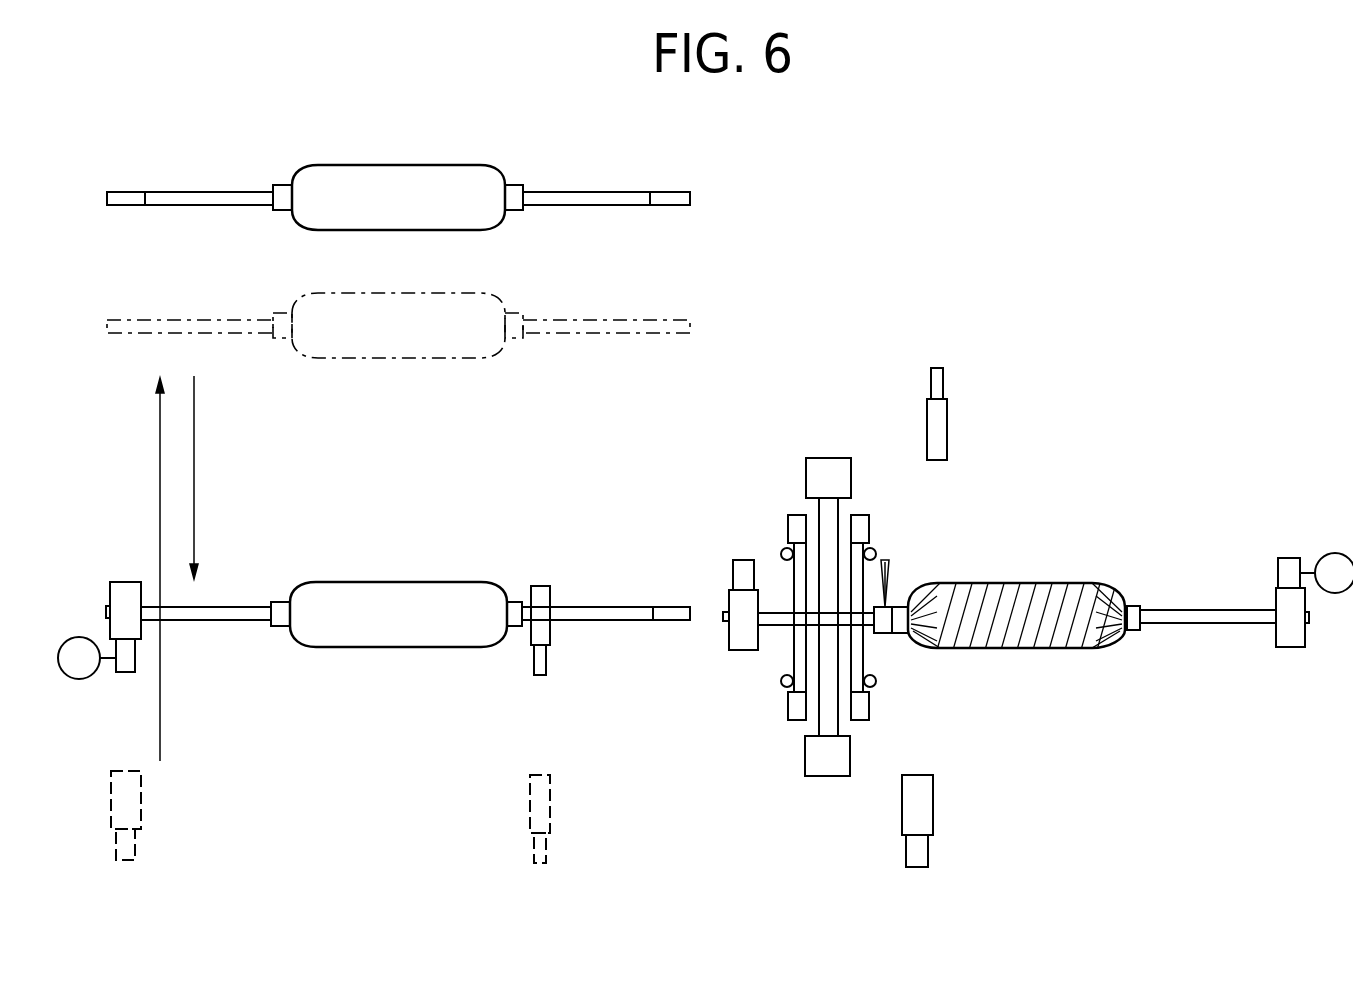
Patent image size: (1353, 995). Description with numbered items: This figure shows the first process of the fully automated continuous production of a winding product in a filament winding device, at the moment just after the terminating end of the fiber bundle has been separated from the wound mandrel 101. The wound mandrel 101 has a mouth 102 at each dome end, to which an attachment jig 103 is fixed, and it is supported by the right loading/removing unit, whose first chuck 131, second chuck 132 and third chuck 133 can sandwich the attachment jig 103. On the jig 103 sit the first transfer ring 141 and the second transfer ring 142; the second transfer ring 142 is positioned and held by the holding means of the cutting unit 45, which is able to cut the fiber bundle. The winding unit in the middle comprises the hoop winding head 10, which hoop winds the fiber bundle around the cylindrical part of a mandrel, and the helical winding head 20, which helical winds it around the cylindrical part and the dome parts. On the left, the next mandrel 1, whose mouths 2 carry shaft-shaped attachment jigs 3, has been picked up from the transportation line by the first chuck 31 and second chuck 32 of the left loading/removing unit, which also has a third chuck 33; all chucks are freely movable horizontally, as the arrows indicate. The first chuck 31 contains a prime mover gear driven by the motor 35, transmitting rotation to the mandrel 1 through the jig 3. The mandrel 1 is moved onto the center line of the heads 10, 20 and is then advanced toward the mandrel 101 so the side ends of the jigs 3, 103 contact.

The mandrel 1 is at (375, 232).
The mouth 2 is at (285, 213).
The attachment jig 3 is at (202, 207).
The hoop winding head 10 is at (795, 720).
The helical winding head 20 is at (827, 777).
The first chuck 31 is at (127, 582).
The second chuck 32 is at (539, 585).
The third chuck 33 is at (933, 803).
The motor 35 is at (69, 679).
The cutting unit 45 is at (889, 560).
The mandrel after the winding process 101 is at (1023, 650).
The mouth 102 is at (900, 633).
The attachment jig 103 is at (773, 628).
The first chuck 131 is at (1290, 648).
The second chuck 132 is at (950, 421).
The third chuck 133 is at (729, 597).
The first transfer ring 141 is at (892, 608).
The second transfer ring 142 is at (880, 636).